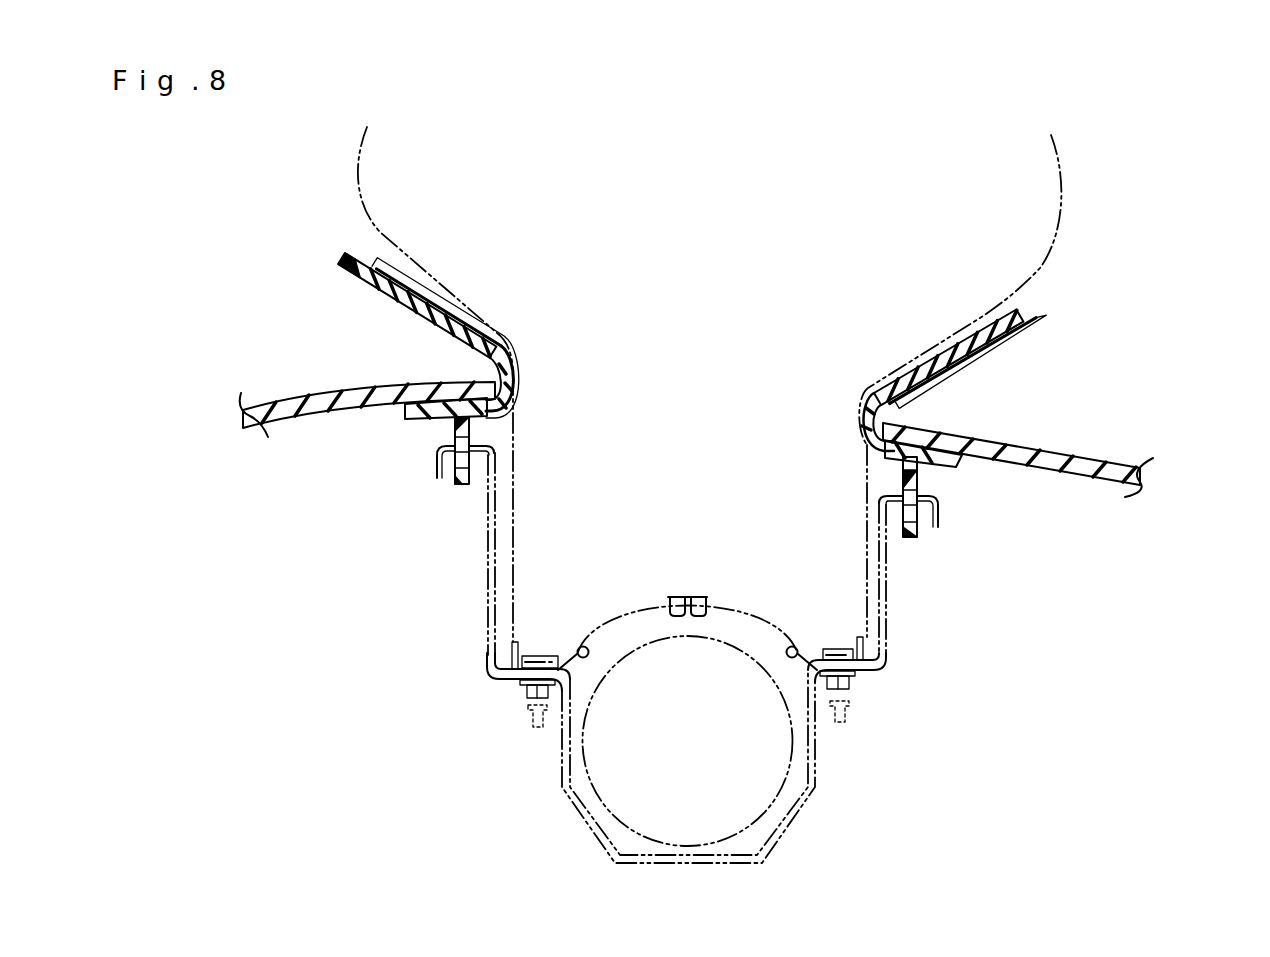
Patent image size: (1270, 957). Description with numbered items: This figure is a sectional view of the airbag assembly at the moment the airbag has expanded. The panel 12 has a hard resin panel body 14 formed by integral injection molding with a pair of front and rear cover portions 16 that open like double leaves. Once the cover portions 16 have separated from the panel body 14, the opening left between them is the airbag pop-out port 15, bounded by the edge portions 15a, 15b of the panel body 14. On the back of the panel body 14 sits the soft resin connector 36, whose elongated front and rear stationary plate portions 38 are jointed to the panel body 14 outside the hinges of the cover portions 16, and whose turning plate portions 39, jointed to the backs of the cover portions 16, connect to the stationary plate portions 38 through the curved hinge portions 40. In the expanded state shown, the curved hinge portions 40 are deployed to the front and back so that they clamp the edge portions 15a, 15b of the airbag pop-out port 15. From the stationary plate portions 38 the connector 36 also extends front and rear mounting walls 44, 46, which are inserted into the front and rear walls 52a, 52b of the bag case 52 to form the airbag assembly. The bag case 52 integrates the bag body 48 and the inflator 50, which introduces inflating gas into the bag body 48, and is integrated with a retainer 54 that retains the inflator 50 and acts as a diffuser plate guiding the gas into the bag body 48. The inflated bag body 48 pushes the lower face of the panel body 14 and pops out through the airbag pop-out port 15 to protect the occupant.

The panel 12 is at (1108, 452).
The panel body 14 is at (318, 412).
The airbag pop-out port 15 is at (707, 451).
The edge portion of the airbag pop-out port 15a is at (493, 382).
The flange portion of inner panel 15b is at (865, 436).
The cover portion 16 is at (410, 312).
The soft resin connector 36 is at (915, 355).
The stationary plate portion 38 is at (431, 405).
The turning plate portion 39 is at (463, 312).
The curved hinge portion 40 is at (517, 380).
The front mounting wall 44 is at (460, 484).
The rear mounting wall 46 is at (917, 458).
The bag body 48 is at (1064, 219).
The inflator 50 is at (792, 740).
The bag case 52 is at (888, 628).
The front wall of the bag case 52a is at (487, 573).
The rear wall of the bag case 52b is at (888, 590).
The retainer 54 is at (798, 645).